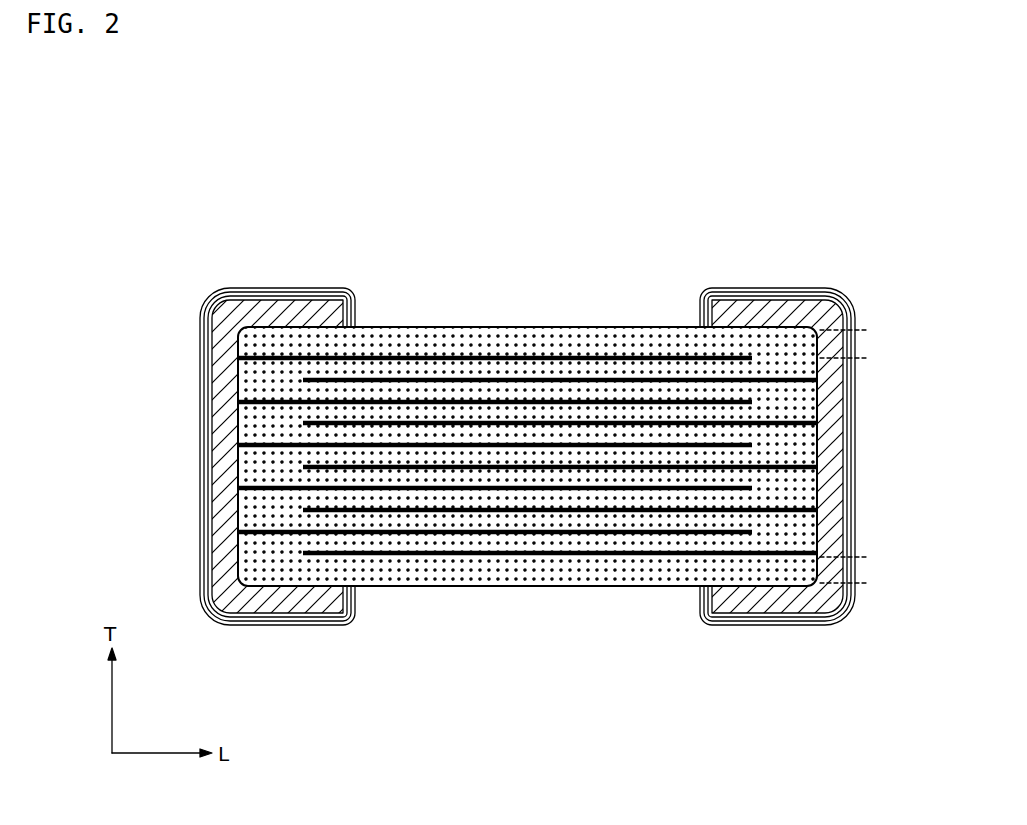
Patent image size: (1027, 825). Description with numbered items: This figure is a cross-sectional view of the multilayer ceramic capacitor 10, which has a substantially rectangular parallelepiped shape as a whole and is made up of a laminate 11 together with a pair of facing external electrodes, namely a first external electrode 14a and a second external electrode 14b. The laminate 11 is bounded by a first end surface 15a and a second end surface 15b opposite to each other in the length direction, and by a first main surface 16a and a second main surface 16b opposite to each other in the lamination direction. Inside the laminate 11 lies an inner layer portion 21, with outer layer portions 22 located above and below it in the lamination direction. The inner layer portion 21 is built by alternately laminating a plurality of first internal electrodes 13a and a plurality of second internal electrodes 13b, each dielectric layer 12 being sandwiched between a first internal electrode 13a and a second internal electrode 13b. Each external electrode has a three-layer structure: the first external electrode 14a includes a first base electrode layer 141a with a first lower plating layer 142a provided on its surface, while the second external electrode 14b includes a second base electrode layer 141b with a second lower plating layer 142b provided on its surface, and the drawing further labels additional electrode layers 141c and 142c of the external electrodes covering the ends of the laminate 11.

The multilayer ceramic capacitor 10 is at (489, 425).
The laminate 11 is at (521, 426).
The dielectric layer 12 is at (577, 475).
The first internal electrode 13a is at (435, 443).
The second internal electrode 13b is at (413, 468).
The first external electrode 14a is at (201, 456).
The second external electrode 14b is at (747, 518).
The first end surface 15a is at (240, 385).
The second end surface 15b is at (818, 558).
The first main surface 16a is at (498, 325).
The second main surface 16b is at (472, 587).
The first base electrode layer 141a is at (230, 493).
The second base electrode layer 141b is at (207, 517).
The first outer plating layer 141c is at (202, 540).
The first lower plating layer 142a is at (825, 700).
The second lower plating layer 142b is at (750, 626).
The second outer plating layer 142c is at (805, 624).
The inner layer portion 21 is at (885, 358).
The outer layer portion 22 is at (885, 330).